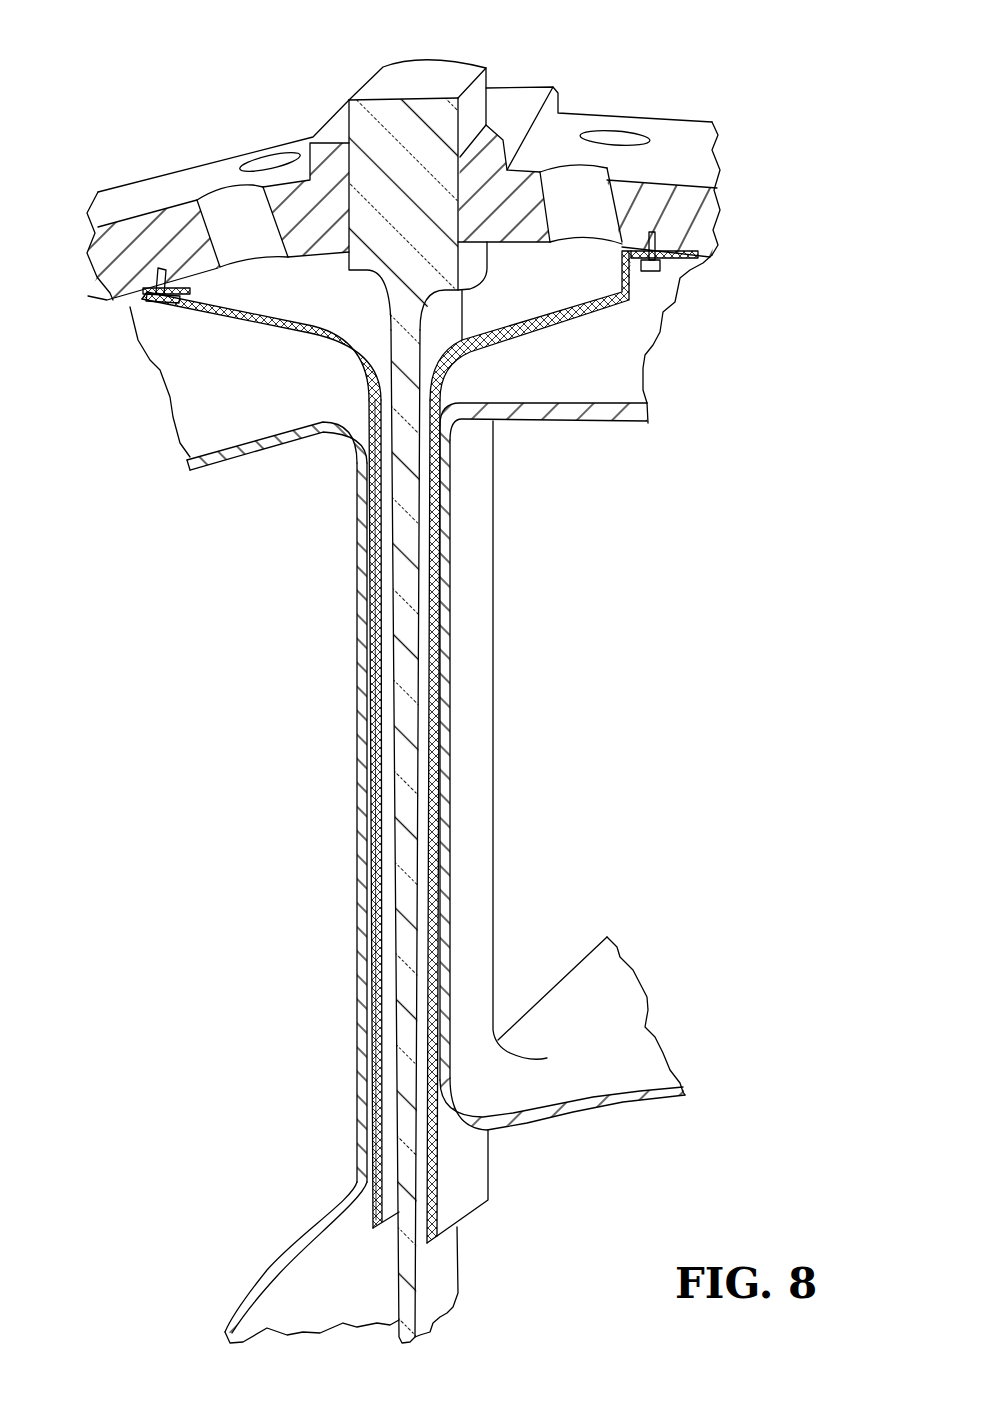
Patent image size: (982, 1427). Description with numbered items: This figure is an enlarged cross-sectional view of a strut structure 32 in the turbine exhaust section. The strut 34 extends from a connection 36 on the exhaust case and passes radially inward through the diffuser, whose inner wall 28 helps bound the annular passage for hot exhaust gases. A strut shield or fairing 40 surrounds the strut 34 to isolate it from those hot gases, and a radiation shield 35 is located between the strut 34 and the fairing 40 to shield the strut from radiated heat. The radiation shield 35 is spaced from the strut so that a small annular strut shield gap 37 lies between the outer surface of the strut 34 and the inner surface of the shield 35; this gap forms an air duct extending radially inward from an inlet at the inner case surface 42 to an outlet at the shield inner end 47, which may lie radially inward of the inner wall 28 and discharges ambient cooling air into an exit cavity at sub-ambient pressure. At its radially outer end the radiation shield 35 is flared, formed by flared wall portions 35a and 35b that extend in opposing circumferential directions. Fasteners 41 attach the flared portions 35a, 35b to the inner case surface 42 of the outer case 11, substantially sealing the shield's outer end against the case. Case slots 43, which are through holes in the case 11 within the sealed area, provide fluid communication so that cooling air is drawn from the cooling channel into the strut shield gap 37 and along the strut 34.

The outer case 11 is at (165, 180).
The inner wall 28 is at (615, 1010).
The strut structure 32 is at (513, 722).
The strut 34 is at (406, 660).
The radiation shield 35 is at (375, 740).
The flared wall portion 35a is at (313, 328).
The flared wall portion 35b is at (560, 315).
The connection 36 is at (415, 78).
The strut shield gap 37 is at (385, 805).
The strut shield or fairing 40 is at (357, 880).
The fastener 41 is at (165, 300).
The inner case surface 42 is at (702, 256).
The case slot 43 is at (228, 210).
The shield inner end 47 is at (470, 1180).